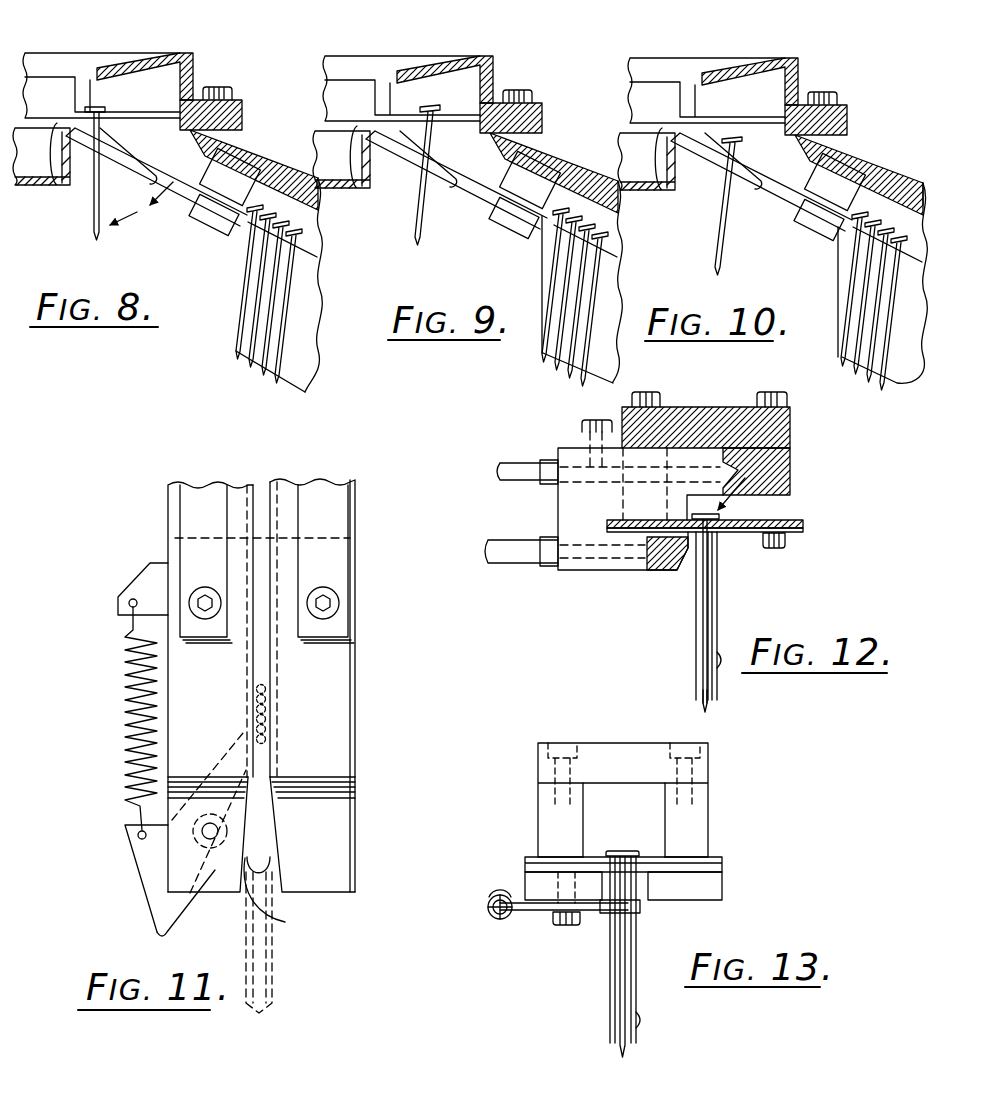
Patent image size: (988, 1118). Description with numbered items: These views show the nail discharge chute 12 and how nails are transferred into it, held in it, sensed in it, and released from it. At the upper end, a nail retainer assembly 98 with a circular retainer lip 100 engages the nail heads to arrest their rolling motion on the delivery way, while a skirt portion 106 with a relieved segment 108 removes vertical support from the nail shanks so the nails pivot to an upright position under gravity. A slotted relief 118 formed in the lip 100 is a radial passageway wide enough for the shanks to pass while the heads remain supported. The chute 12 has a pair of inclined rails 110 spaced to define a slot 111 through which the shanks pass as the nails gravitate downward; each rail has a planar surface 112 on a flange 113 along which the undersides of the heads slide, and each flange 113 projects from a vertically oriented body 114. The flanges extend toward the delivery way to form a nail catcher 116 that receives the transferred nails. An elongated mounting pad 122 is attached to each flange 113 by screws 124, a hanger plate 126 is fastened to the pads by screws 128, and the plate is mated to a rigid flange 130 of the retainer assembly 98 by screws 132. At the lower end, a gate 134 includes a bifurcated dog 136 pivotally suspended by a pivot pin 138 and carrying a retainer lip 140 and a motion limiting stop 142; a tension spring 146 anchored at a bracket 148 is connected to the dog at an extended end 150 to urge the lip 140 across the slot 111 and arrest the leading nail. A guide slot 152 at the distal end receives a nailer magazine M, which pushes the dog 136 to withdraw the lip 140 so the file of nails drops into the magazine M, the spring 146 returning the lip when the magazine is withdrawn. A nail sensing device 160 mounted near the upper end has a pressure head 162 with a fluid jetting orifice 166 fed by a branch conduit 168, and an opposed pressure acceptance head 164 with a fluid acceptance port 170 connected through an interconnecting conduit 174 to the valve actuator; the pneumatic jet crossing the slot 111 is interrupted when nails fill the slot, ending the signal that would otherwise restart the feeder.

In FIG. 10, the nail discharge chute 12 is at (905, 165).
In FIG. 11, the nail discharge chute 12 is at (166, 523).
In FIG. 8, the nail retainer assembly 98 is at (186, 52).
In FIG. 9, the nail retainer assembly 98 is at (460, 60).
In FIG. 10, the nail retainer assembly 98 is at (770, 63).
In FIG. 8, the retainer lip 100 is at (76, 108).
In FIG. 9, the retainer lip 100 is at (401, 74).
In FIG. 10, the retainer lip 100 is at (706, 74).
In FIG. 8, the clip 106 is at (55, 125).
In FIG. 9, the clip 106 is at (341, 175).
In FIG. 10, the clip 106 is at (646, 178).
In FIG. 8, the relieved segment 108 is at (90, 165).
In FIG. 9, the relieved segment 108 is at (403, 189).
In FIG. 10, the relieved segment 108 is at (707, 195).
In FIG. 8, the inclined rails 110 is at (300, 372).
In FIG. 9, the inclined rails 110 is at (539, 297).
In FIG. 10, the inclined rails 110 is at (837, 301).
In FIG. 11, the inclined rails 110 is at (277, 648).
In FIG. 12, the inclined rails 110 is at (717, 623).
In FIG. 13, the inclined rails 110 is at (632, 992).
In FIG. 11, the slot 111 is at (262, 500).
In FIG. 12, the slot 111 is at (700, 590).
In FIG. 13, the slot 111 is at (617, 953).
In FIG. 8, the planar surface 112 is at (166, 165).
In FIG. 12, the planar surface 112 is at (637, 518).
In FIG. 13, the planar surface 112 is at (535, 857).
In FIG. 12, the flange 113 is at (605, 534).
In FIG. 13, the flange 113 is at (525, 867).
In FIG. 12, the vertically oriented body 114 is at (722, 660).
In FIG. 13, the vertically oriented body 114 is at (627, 1030).
In FIG. 8, the nail catcher 116 is at (160, 152).
In FIG. 9, the nail catcher 116 is at (456, 155).
In FIG. 10, the nail catcher 116 is at (761, 159).
In FIG. 8, the slotted relief 118 is at (95, 106).
In FIG. 9, the slotted relief 118 is at (381, 134).
In FIG. 10, the slotted relief 118 is at (668, 180).
In FIG. 11, the mounting pad 122 is at (313, 490).
In FIG. 12, the mounting pad 122 is at (573, 492).
In FIG. 13, the mounting pad 122 is at (672, 823).
In FIG. 12, the screws 124 is at (768, 551).
In FIG. 8, the hanger plate 126 is at (280, 150).
In FIG. 9, the hanger plate 126 is at (582, 282).
In FIG. 10, the hanger plate 126 is at (882, 252).
In FIG. 12, the hanger plate 126 is at (790, 427).
In FIG. 13, the hanger plate 126 is at (605, 750).
In FIG. 11, the screws 128 is at (325, 600).
In FIG. 12, the screws 128 is at (760, 390).
In FIG. 13, the screws 128 is at (567, 743).
In FIG. 8, the rigid flange 130 is at (232, 100).
In FIG. 9, the rigid flange 130 is at (522, 97).
In FIG. 10, the rigid flange 130 is at (849, 116).
In FIG. 8, the screws 132 is at (217, 87).
In FIG. 9, the screws 132 is at (534, 66).
In FIG. 10, the screws 132 is at (856, 83).
In FIG. 11, the gate 134 is at (157, 868).
In FIG. 13, the gate 134 is at (486, 914).
In FIG. 11, the bifurcated dog 136 is at (157, 925).
In FIG. 13, the bifurcated dog 136 is at (525, 910).
In FIG. 11, the pivot pin 138 is at (211, 840).
In FIG. 13, the pivot pin 138 is at (557, 928).
In FIG. 11, the retainer lip 140 is at (258, 790).
In FIG. 13, the retainer lip 140 is at (630, 907).
In FIG. 11, the motion limiting stop 142 is at (277, 738).
In FIG. 11, the tension spring 146 is at (122, 708).
In FIG. 13, the tension spring 146 is at (488, 897).
In FIG. 11, the bracket 148 is at (145, 585).
In FIG. 11, the extended end 150 is at (136, 838).
In FIG. 11, the guide slot 152 is at (285, 922).
In FIG. 8, the nail sensing device 160 is at (190, 214).
In FIG. 9, the nail sensing device 160 is at (486, 196).
In FIG. 10, the nail sensing device 160 is at (795, 205).
In FIG. 12, the nail sensing device 160 is at (557, 437).
In FIG. 8, the pressure head 162 is at (235, 162).
In FIG. 9, the pressure head 162 is at (554, 163).
In FIG. 10, the pressure head 162 is at (836, 175).
In FIG. 12, the pressure head 162 is at (793, 458).
In FIG. 8, the pressure acceptance head 164 is at (202, 220).
In FIG. 9, the pressure acceptance head 164 is at (494, 230).
In FIG. 10, the pressure acceptance head 164 is at (780, 219).
In FIG. 12, the pressure acceptance head 164 is at (637, 573).
In FIG. 12, the fluid jetting orifice 166 is at (722, 522).
In FIG. 12, the branch conduit 168 is at (512, 467).
In FIG. 12, the fluid acceptance port 170 is at (705, 570).
In FIG. 12, the interconnecting conduit 174 is at (505, 557).
In FIG. 11, the magazine M is at (275, 943).